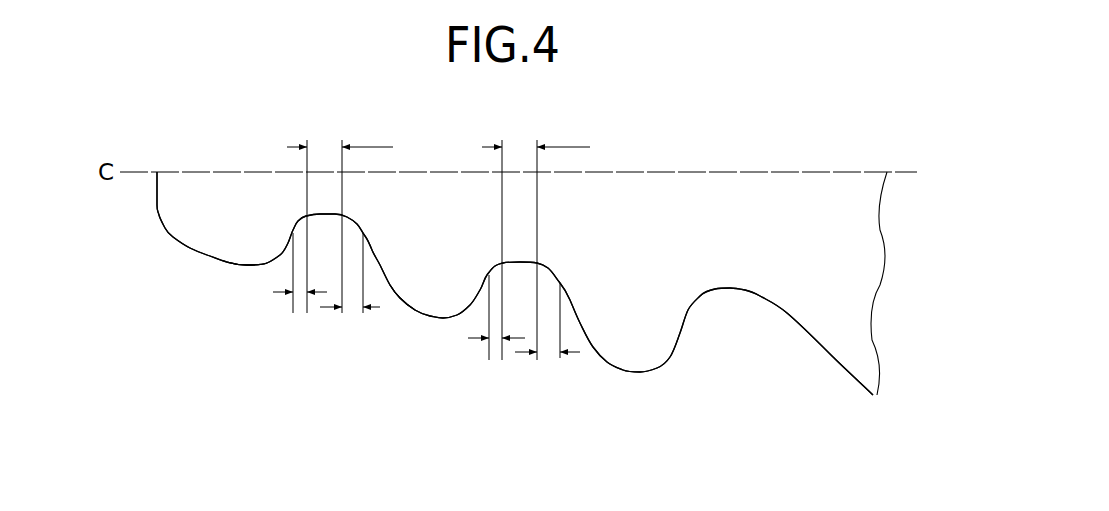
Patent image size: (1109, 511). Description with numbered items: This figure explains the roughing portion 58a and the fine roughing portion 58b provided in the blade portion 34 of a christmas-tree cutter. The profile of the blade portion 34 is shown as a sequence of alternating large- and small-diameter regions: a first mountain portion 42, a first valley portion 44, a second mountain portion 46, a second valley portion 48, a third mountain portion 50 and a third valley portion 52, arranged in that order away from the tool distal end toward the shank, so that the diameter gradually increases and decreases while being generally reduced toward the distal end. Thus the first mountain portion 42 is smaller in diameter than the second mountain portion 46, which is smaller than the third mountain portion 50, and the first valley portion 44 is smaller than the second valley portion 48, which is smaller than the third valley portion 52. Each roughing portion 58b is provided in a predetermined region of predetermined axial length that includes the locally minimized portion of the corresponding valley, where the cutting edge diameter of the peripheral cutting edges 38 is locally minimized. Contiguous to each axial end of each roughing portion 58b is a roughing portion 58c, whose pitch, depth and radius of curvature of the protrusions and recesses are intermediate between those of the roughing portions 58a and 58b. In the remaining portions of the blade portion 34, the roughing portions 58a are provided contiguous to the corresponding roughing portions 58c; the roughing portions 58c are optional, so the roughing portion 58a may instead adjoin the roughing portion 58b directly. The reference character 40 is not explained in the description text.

The blade portion 34 is at (143, 253).
The peripheral cutting edges 38 is at (613, 362).
The end face 40 is at (157, 188).
The first mountain portion 42 is at (205, 262).
The first valley portion 44 is at (322, 318).
The second mountain portion 46 is at (435, 330).
The second valley portion 48 is at (522, 367).
The third mountain portion 50 is at (658, 375).
The third valley portion 52 is at (725, 308).
The roughing portion 58a is at (237, 263).
The fine roughing portion 58b is at (438, 237).
The intermediate roughing portion 58c is at (415, 311).